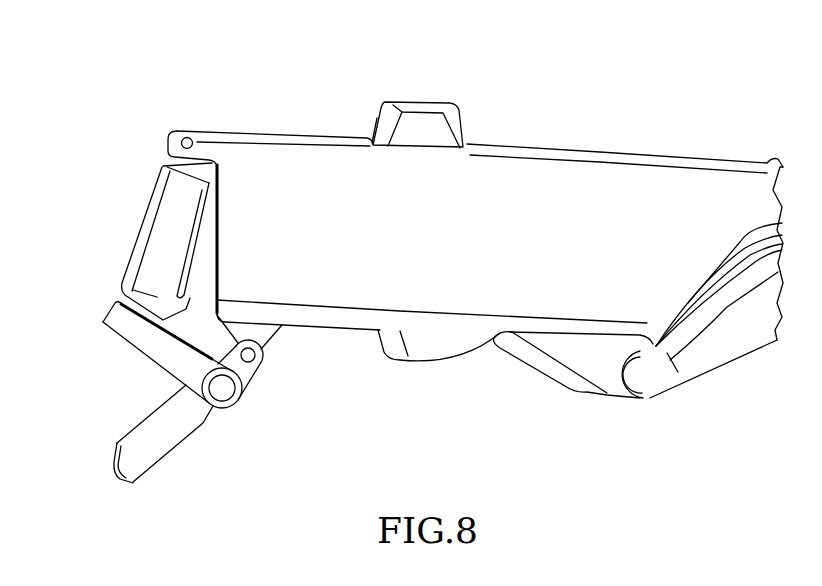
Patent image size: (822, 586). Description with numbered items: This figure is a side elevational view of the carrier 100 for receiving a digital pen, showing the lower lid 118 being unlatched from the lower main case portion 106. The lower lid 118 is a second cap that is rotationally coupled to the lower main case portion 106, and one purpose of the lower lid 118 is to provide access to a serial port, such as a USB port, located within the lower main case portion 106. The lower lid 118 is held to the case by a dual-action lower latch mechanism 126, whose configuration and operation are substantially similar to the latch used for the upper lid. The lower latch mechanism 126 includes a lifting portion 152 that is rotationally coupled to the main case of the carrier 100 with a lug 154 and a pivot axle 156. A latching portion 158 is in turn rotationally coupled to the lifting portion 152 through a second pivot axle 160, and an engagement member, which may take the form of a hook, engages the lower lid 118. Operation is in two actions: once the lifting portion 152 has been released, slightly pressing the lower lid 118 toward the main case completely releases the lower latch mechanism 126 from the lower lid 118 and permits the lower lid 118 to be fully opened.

The carrier 100 is at (477, 206).
The lower main case portion 106 is at (285, 133).
The lower lid 118 is at (137, 232).
The lower latch mechanism 126 is at (193, 403).
The lifting portion 152 is at (157, 465).
The lug 154 is at (253, 375).
The pivot axle 156 is at (257, 353).
The latching portion 158 is at (117, 340).
The pivot axle 160 is at (223, 390).